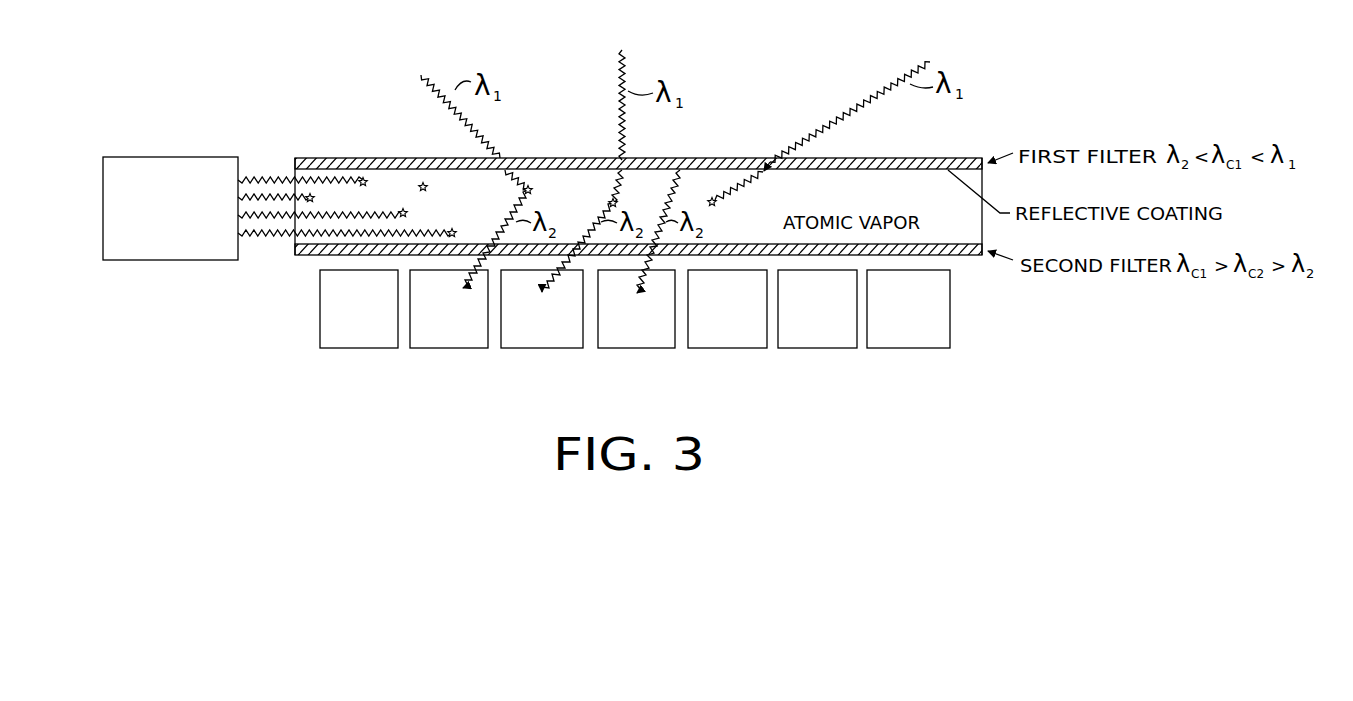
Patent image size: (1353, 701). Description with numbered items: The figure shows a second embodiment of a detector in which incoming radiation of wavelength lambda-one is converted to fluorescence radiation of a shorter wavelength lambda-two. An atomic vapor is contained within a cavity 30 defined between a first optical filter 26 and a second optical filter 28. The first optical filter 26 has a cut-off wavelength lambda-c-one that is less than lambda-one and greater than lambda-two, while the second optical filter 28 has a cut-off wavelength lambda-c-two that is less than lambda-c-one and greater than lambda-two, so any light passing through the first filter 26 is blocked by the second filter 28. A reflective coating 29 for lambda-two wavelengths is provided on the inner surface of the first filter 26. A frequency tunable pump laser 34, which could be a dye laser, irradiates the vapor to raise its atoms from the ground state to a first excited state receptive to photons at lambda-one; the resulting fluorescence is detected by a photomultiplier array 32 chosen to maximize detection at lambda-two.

The first optical filter 26 is at (909, 158).
The second optical filter 28 is at (967, 257).
The reflective coating 29 is at (985, 185).
The cavity 30 is at (419, 181).
The photomultiplier array 32 is at (310, 257).
The frequency tunable pump laser 34 is at (170, 260).